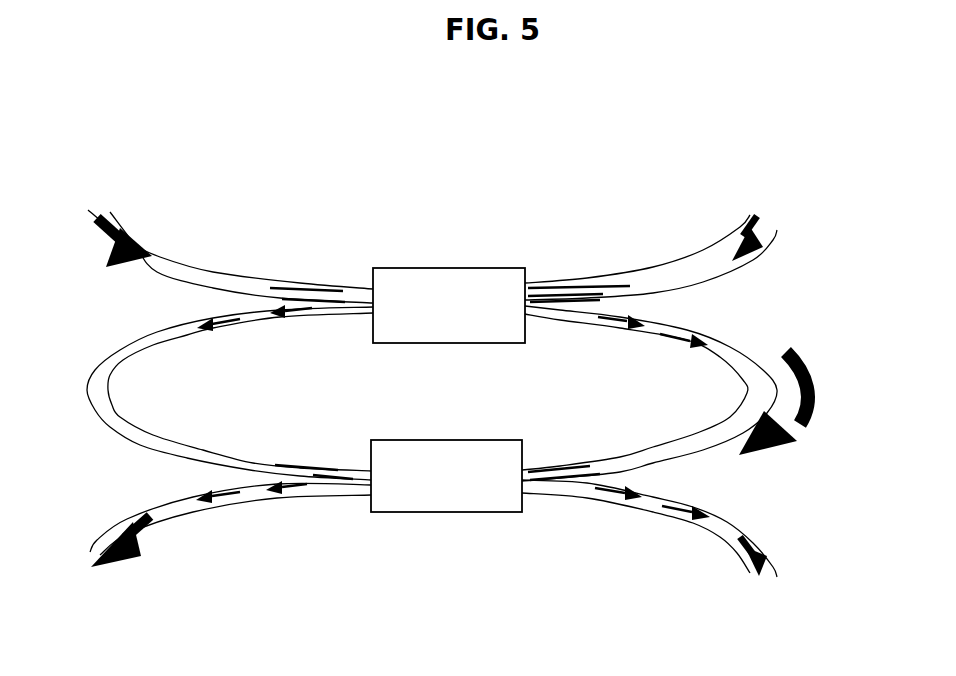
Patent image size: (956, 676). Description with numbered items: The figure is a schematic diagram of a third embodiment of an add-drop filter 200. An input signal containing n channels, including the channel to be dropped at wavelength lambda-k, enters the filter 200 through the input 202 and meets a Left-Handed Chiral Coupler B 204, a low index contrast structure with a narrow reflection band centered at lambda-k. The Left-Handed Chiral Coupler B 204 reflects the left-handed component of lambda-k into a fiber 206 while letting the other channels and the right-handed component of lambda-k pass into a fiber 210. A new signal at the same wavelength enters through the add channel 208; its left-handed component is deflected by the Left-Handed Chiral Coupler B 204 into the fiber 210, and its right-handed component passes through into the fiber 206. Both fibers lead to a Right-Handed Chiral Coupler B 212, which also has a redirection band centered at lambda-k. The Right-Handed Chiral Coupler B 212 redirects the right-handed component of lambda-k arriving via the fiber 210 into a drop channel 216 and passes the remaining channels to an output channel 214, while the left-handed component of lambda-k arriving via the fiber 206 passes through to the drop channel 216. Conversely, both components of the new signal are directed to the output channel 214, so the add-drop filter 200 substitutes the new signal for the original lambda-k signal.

The add-drop filter 200 is at (436, 202).
The input 202 is at (194, 263).
The Left-Handed Chiral Coupler B 204 is at (423, 268).
The fiber 206 is at (113, 353).
The add channel 208 is at (590, 277).
The fiber 210 is at (727, 340).
The Right-Handed Chiral Coupler B 212 is at (423, 440).
The output channel 214 is at (296, 498).
The drop channel 216 is at (736, 517).